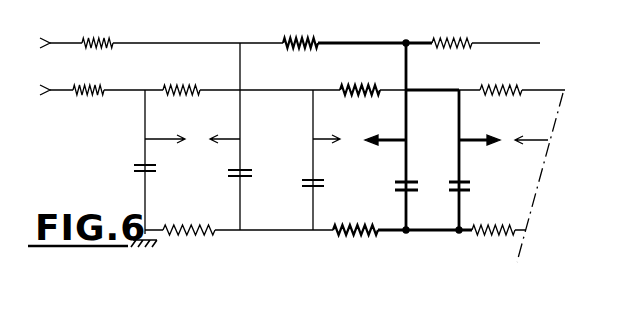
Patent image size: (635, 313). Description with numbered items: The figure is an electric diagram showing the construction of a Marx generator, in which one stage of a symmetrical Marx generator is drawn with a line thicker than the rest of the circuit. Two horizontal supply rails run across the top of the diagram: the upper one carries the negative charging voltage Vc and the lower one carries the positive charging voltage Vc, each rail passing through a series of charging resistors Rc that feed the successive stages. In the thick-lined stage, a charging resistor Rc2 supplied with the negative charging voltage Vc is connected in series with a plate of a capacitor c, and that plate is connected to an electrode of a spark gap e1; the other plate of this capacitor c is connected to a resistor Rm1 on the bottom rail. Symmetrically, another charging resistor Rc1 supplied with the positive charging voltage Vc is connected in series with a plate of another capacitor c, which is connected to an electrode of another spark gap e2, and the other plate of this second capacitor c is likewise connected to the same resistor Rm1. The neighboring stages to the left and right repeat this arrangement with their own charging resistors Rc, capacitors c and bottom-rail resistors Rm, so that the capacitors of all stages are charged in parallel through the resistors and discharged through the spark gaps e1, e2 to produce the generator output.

The charging voltage Vc is at (28, 66).
The charging resistor Rc is at (297, 52).
The charging resistor Rc1 is at (366, 76).
The charging resistor Rc2 is at (307, 29).
The resistor Rm is at (339, 244).
The resistor Rm1 is at (358, 246).
The capacitor c is at (307, 188).
The spark gap e1 is at (382, 129).
The spark gap e2 is at (493, 129).